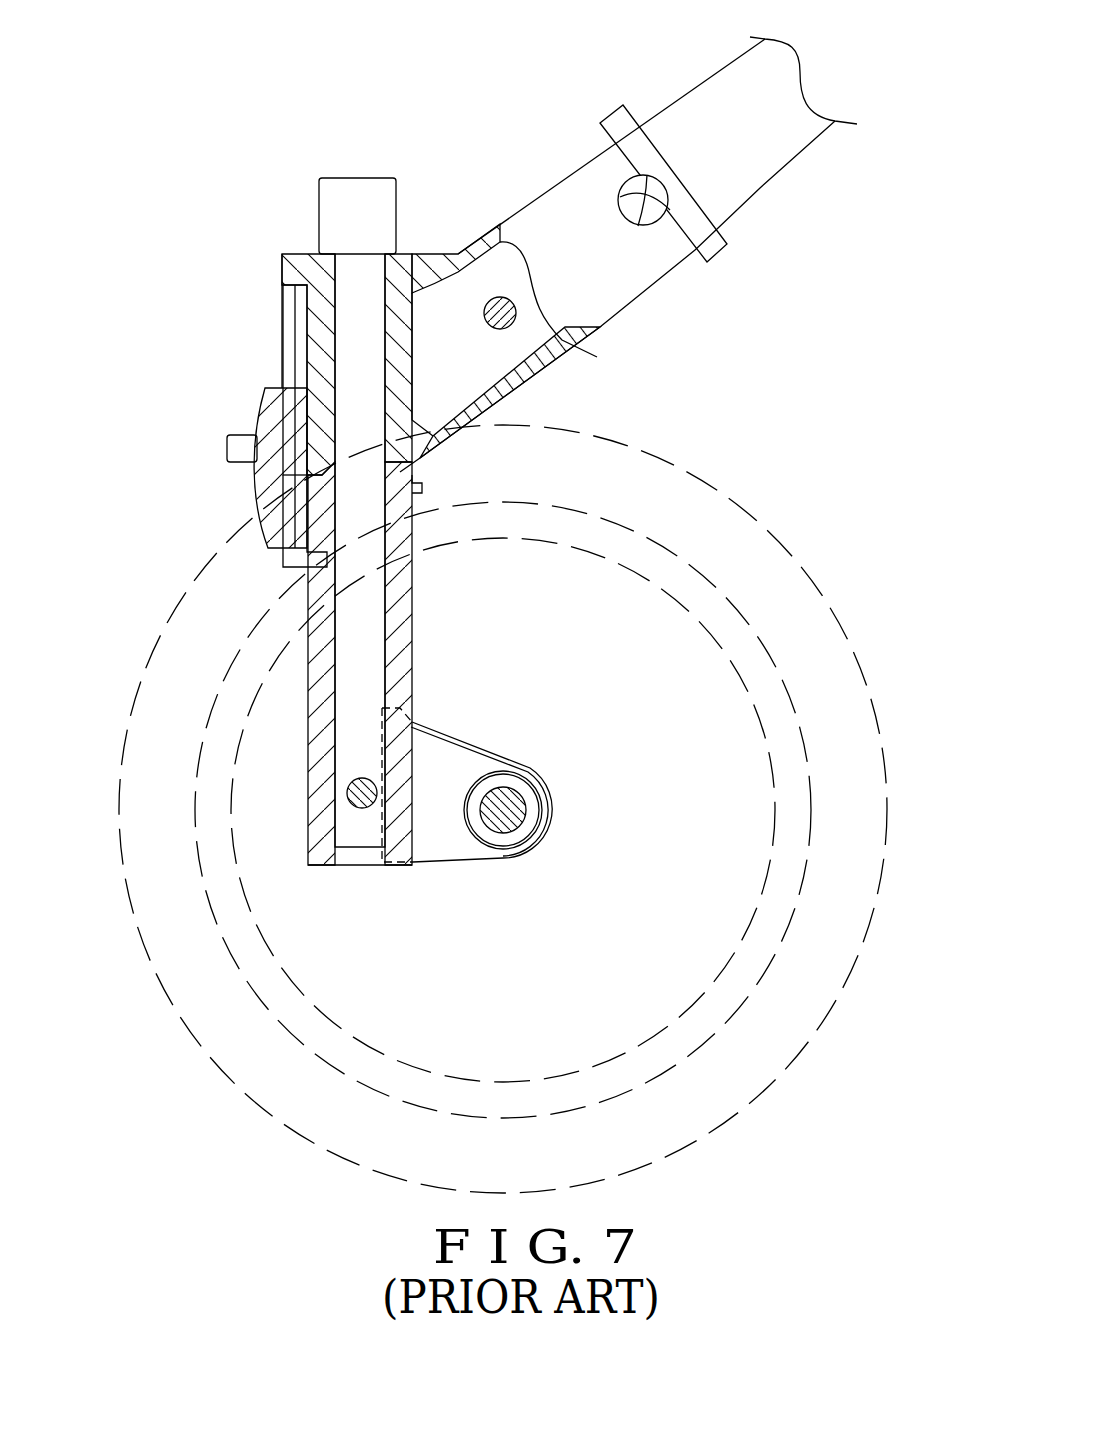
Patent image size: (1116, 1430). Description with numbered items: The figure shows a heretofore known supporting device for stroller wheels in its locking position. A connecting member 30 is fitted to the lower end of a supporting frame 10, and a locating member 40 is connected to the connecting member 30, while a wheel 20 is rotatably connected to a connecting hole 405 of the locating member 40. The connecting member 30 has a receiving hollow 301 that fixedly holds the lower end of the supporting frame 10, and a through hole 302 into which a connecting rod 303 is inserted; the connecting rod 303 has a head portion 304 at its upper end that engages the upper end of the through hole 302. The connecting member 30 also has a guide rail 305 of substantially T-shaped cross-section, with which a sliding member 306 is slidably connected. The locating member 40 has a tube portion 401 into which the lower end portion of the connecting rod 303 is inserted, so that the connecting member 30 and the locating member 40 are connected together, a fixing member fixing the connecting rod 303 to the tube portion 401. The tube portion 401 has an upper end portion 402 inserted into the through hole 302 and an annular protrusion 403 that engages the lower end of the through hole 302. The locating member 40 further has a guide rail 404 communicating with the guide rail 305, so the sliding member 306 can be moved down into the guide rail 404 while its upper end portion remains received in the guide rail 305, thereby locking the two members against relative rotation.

The supporting frame 10 is at (765, 167).
The wheel 20 is at (722, 537).
The connecting member 30 is at (463, 102).
The locating member 40 is at (240, 722).
The receiving hollow 301 is at (568, 192).
The through hole 302 is at (333, 324).
The connecting rod 303 is at (345, 348).
The head portion 304 is at (357, 185).
The guide rail 305 is at (288, 327).
The sliding member 306 is at (292, 470).
The tube portion 401 is at (398, 640).
The upper end portion 402 is at (433, 438).
The annular protrusion 403 is at (422, 484).
The guide rail 404 is at (292, 523).
The connecting hole 405 is at (528, 818).